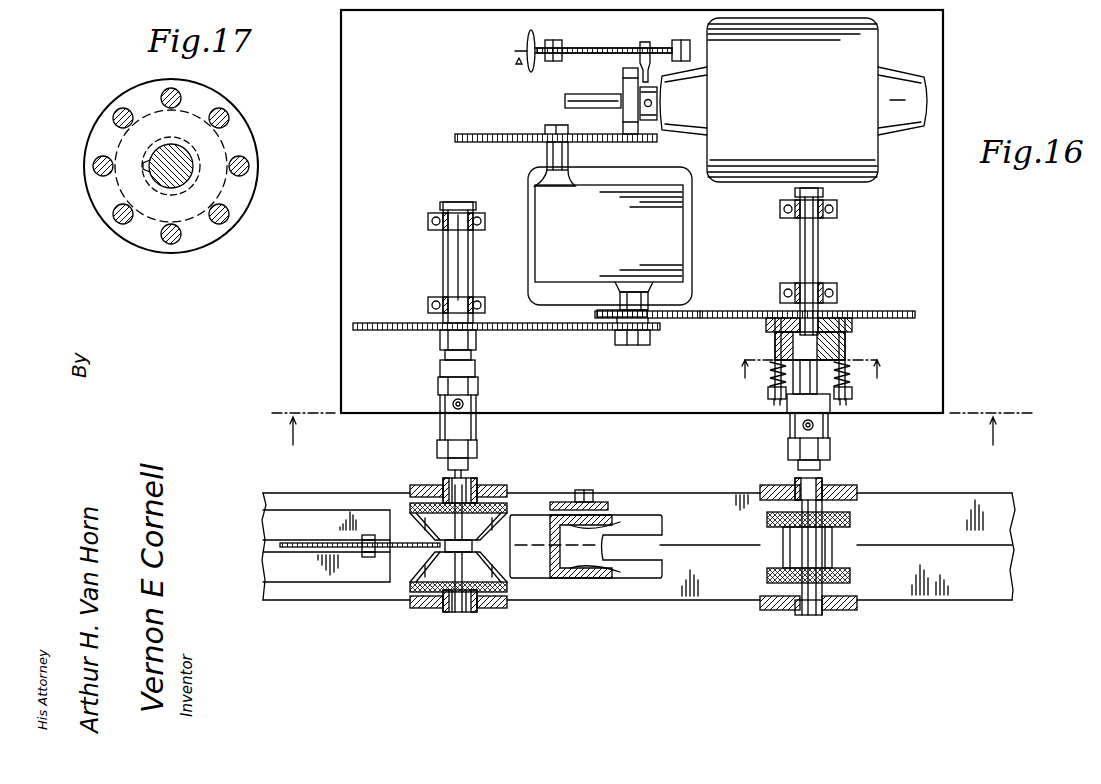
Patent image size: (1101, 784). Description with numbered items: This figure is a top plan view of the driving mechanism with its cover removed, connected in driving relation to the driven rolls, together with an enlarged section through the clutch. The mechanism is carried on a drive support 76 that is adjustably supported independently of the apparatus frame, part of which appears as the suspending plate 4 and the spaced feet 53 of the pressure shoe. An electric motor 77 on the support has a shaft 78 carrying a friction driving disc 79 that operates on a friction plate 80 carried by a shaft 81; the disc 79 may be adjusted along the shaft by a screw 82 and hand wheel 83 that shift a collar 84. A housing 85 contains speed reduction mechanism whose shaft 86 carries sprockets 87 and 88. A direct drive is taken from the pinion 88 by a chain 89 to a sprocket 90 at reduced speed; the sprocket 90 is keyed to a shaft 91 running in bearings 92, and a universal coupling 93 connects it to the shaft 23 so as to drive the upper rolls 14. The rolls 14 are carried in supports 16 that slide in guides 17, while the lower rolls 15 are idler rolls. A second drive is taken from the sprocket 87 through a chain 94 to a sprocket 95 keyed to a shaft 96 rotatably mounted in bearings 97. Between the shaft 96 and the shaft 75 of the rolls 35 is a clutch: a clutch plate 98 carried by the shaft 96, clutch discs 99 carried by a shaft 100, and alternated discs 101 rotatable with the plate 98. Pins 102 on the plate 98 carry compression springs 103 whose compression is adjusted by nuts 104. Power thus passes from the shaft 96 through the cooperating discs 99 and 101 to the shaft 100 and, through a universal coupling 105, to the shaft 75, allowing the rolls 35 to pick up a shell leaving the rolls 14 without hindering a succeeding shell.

In FIG. 16, the plate 4 is at (332, 548).
In FIG. 16, the upper rolls 14 is at (412, 505).
In FIG. 16, the lower rolls 15 is at (644, 429).
In FIG. 16, the supports 16 is at (475, 487).
In FIG. 16, the guides 17 is at (410, 622).
In FIG. 16, the shaft 23 is at (452, 475).
In FIG. 16, the rolls 35 is at (850, 516).
In FIG. 16, the feet 53 is at (633, 522).
In FIG. 16, the shaft 75 is at (830, 455).
In FIG. 16, the drive support 76 is at (943, 273).
In FIG. 16, the electric motor 77 is at (868, 62).
In FIG. 16, the shaft 78 is at (605, 98).
In FIG. 16, the friction driving disc 79 is at (623, 123).
In FIG. 16, the friction plate 80 is at (622, 143).
In FIG. 16, the shaft 81 is at (547, 152).
In FIG. 16, the screw 82 is at (598, 46).
In FIG. 16, the hand wheel 83 is at (528, 50).
In FIG. 16, the collar 84 is at (650, 120).
In FIG. 16, the housing 85 is at (678, 238).
In FIG. 16, the shaft 86 is at (648, 302).
In FIG. 16, the sprocket 87 is at (602, 310).
In FIG. 16, the sprocket 88 is at (650, 335).
In FIG. 16, the chain 89 is at (605, 341).
In FIG. 16, the sprocket 90 is at (418, 322).
In FIG. 16, the shaft 91 is at (462, 265).
In FIG. 16, the bearings 92 is at (473, 215).
In FIG. 16, the universal coupling 93 is at (476, 432).
In FIG. 16, the chain 94 is at (740, 318).
In FIG. 16, the sprocket 95 is at (882, 311).
In FIG. 16, the shaft 96 is at (812, 248).
In FIG. 16, the bearings 97 is at (823, 196).
In FIG. 16, the clutch plate 98 is at (852, 322).
In FIG. 17, the clutch discs 99 is at (238, 190).
In FIG. 16, the clutch discs 99 is at (845, 338).
In FIG. 17, the shaft 100 is at (185, 156).
In FIG. 16, the shaft 100 is at (790, 397).
In FIG. 16, the discs 101 is at (852, 350).
In FIG. 17, the pins 102 is at (226, 114).
In FIG. 16, the pins 102 is at (768, 394).
In FIG. 16, the compression springs 103 is at (850, 380).
In FIG. 16, the nuts 104 is at (852, 396).
In FIG. 16, the universal coupling 105 is at (828, 420).